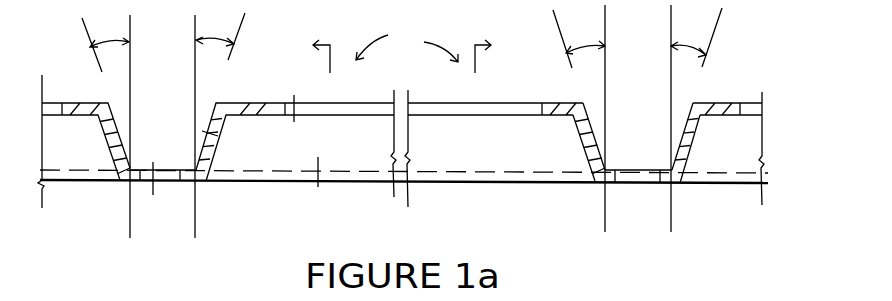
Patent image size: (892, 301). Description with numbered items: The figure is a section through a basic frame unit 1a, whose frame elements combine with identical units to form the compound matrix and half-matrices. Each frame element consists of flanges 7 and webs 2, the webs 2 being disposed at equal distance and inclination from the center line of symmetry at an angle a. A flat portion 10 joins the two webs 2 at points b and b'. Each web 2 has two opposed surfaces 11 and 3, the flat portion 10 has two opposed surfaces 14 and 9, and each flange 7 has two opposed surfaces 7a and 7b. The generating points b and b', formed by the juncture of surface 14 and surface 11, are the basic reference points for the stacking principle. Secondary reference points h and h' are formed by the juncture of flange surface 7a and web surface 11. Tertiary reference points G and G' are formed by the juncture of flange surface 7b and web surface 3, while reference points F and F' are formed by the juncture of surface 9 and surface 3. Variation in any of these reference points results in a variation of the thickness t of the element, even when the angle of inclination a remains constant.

The basic frame unit 1a is at (401, 50).
The web 2 is at (583, 155).
The web surface 3 is at (580, 136).
The flange 7 is at (548, 103).
The flange surface 7a is at (413, 100).
The flange surface 7b is at (423, 117).
The flat portion surface 9 is at (493, 185).
The flat portion 10 is at (456, 184).
The web surface 11 is at (592, 105).
The flat portion surface 14 is at (466, 173).
The angle of inclination a is at (398, 38).
The generating point b is at (377, 141).
The generating point b' is at (422, 139).
The reference point F is at (144, 193).
The reference point F' is at (217, 202).
The tertiary reference point G is at (86, 141).
The tertiary reference point G' is at (295, 142).
The secondary reference point h is at (97, 84).
The secondary reference point h' is at (235, 84).
The thickness t is at (152, 186).